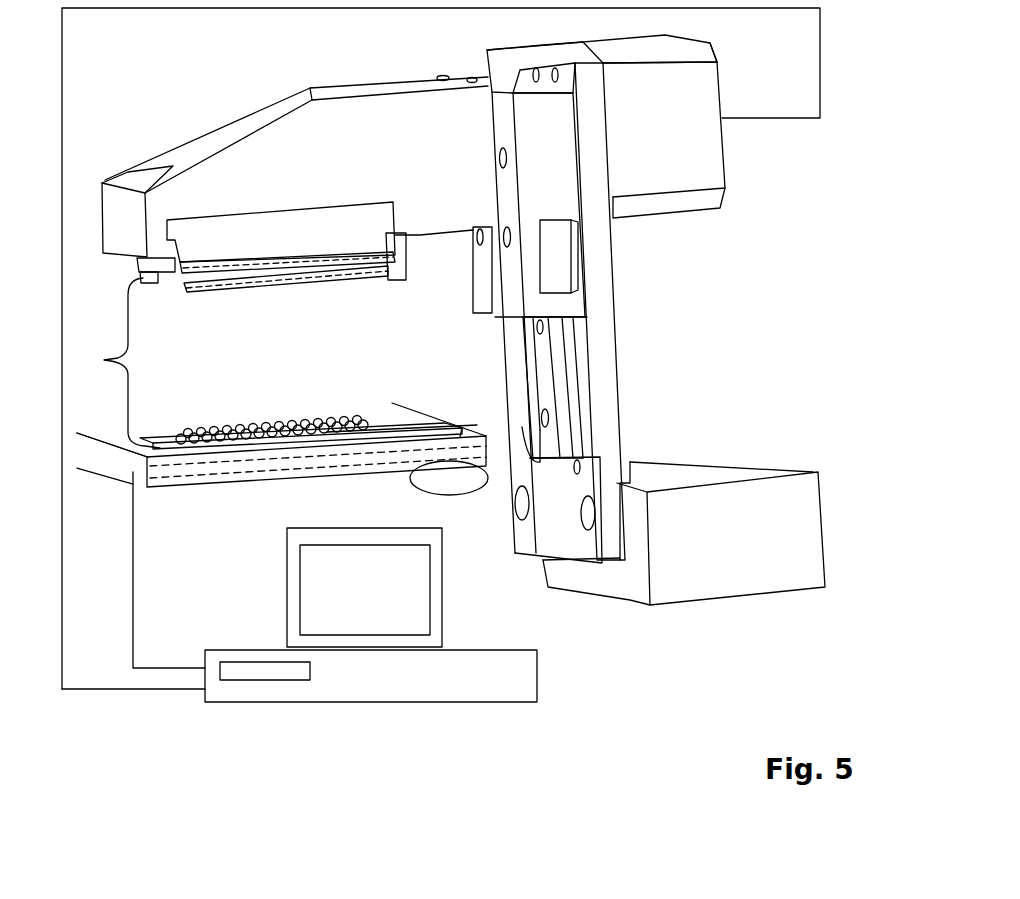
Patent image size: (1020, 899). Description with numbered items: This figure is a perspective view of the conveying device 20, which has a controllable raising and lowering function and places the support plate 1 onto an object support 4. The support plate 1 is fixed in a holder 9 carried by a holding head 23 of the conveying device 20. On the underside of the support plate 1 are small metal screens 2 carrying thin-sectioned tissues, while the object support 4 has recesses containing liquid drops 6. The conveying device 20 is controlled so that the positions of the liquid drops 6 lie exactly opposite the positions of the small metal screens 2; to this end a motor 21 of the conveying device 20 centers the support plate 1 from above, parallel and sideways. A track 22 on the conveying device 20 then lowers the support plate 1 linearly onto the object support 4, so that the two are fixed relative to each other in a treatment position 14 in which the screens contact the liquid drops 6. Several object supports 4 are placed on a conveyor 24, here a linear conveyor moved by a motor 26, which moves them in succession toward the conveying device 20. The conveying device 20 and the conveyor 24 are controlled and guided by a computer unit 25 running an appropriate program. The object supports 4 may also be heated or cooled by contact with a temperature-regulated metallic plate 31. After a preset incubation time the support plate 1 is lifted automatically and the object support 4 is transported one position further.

The support plate 1 is at (196, 283).
The small metal screens 2 is at (338, 278).
The object support 4 is at (162, 442).
The liquid drops 6 is at (276, 422).
The holder 9 is at (242, 240).
The treatment position 14 is at (126, 348).
The conveying device 20 is at (715, 319).
The motor 21 is at (686, 152).
The track 22 is at (560, 377).
The holding head 23 is at (384, 172).
The conveyor 24 is at (207, 470).
The computer unit 25 is at (520, 693).
The motor 26 is at (468, 486).
The temperature-regulated metallic plate 31 is at (460, 437).